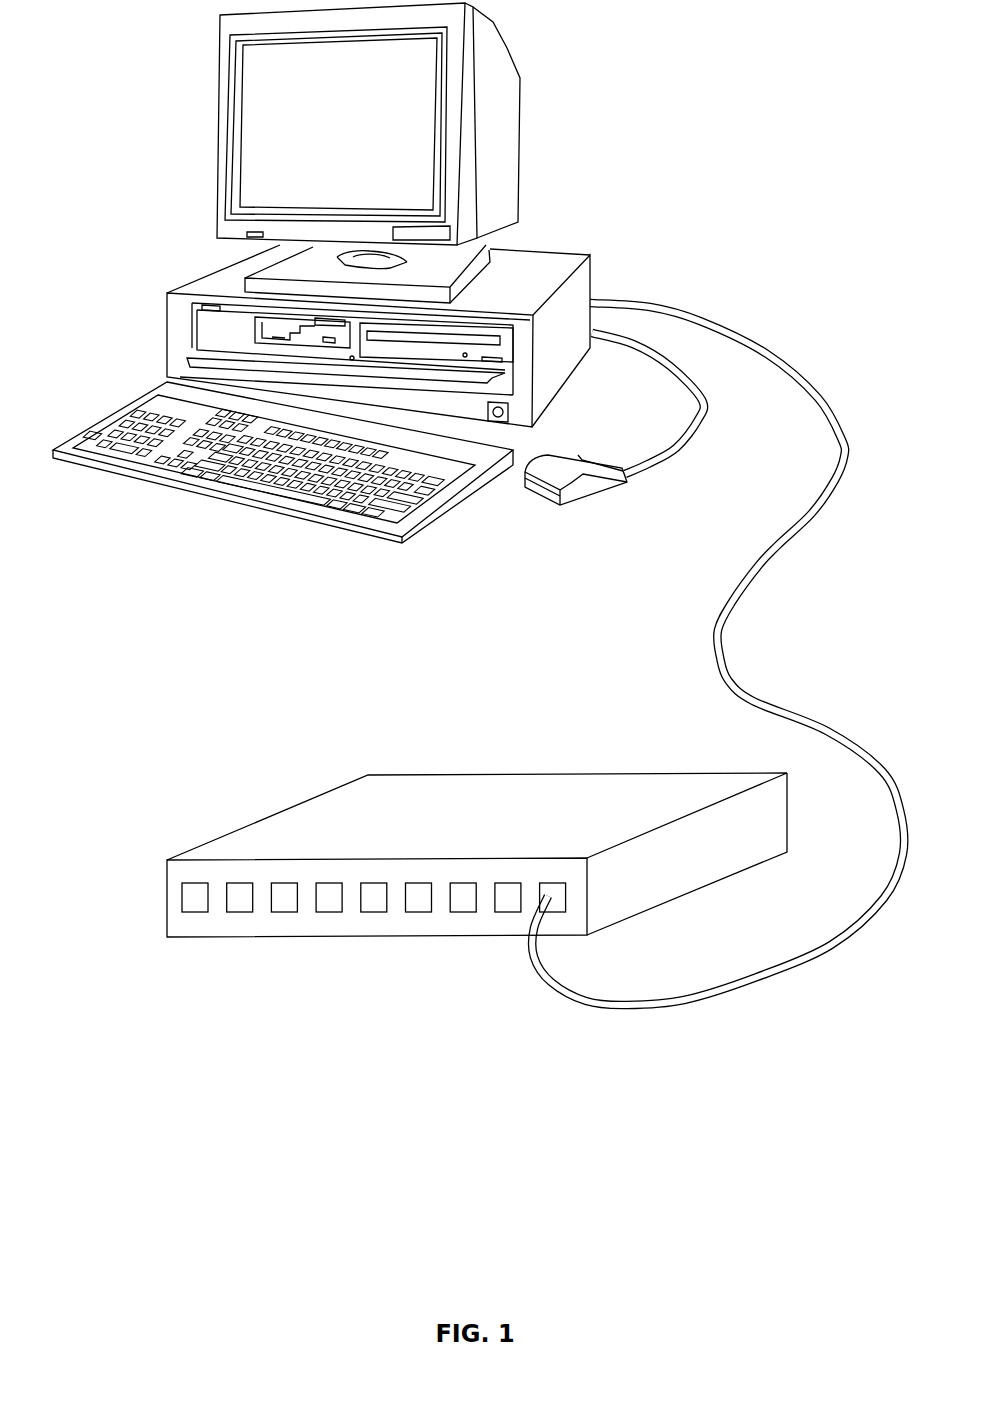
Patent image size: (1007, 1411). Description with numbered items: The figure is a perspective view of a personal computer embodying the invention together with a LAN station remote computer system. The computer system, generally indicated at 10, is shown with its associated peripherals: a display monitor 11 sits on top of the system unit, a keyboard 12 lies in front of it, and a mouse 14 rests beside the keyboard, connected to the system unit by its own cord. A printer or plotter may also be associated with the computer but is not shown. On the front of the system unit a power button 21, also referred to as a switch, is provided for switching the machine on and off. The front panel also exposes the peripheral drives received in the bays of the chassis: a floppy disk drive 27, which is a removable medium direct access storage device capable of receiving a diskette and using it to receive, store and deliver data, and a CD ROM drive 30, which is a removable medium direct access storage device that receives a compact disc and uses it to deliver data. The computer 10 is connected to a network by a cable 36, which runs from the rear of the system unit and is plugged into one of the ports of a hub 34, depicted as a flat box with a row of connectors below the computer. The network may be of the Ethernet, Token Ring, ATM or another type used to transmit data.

The computer system 10 is at (162, 209).
The display monitor 11 is at (218, 60).
The keyboard 12 is at (105, 472).
The mouse 14 is at (590, 498).
The power button 21 is at (512, 418).
The floppy disk drive 27 is at (265, 327).
The CD ROM drive 30 is at (502, 348).
The hub 34 is at (205, 726).
The cable 36 is at (790, 548).